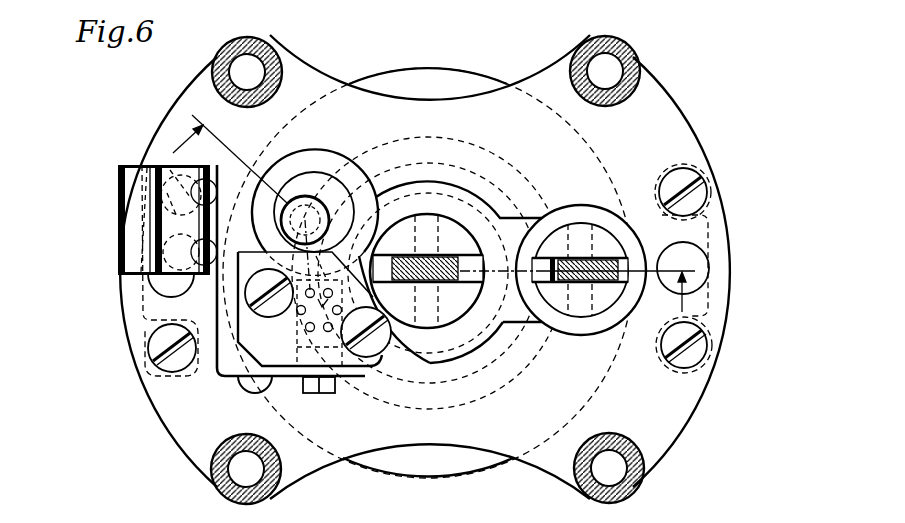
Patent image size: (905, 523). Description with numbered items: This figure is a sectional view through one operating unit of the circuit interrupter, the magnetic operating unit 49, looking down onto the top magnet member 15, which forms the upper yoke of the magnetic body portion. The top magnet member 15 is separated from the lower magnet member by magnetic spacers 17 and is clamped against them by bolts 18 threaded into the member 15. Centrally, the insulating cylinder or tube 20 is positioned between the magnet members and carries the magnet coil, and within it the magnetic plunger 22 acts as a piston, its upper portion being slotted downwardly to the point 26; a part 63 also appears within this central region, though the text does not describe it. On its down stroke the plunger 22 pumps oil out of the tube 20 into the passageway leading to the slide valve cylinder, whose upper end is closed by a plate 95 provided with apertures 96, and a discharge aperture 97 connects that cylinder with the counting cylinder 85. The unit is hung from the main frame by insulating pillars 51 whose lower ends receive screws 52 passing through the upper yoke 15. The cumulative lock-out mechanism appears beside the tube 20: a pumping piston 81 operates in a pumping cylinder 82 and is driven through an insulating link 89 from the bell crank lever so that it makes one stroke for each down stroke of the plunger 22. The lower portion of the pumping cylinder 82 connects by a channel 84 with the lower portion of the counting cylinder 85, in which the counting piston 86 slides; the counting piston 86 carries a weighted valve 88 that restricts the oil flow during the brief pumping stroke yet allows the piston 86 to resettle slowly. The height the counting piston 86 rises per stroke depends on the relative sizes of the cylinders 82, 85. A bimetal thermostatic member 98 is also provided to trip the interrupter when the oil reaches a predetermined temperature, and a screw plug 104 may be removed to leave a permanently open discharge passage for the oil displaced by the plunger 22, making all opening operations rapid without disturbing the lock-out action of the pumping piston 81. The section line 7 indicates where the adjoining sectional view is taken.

The section line 7- 7 is at (434, 206).
The top magnet member 15 is at (680, 418).
The magnetic spacers 17 is at (711, 299).
The bolts 18 is at (167, 282).
The cylinder or tube 20 is at (475, 472).
The magnetic plunger 22 is at (458, 304).
The slot end point 26 is at (485, 273).
The magnetic operating unit 49 is at (503, 460).
The insulating pillars 51 is at (628, 42).
The screws 52 is at (608, 70).
The shaft 63 is at (437, 254).
The pumping piston 81 is at (608, 243).
The pumping cylinder 82 is at (638, 236).
The channel 84 is at (453, 142).
The counting cylinder 85 is at (333, 154).
The counting piston 86 is at (280, 196).
The weighted valve 88 is at (316, 197).
The insulating link 89 is at (597, 282).
The plate 95 is at (300, 353).
The apertures 96 is at (302, 314).
The discharge aperture 97 is at (326, 227).
The bimetal thermostatic members 98 is at (117, 239).
The screw plug 104 is at (328, 393).